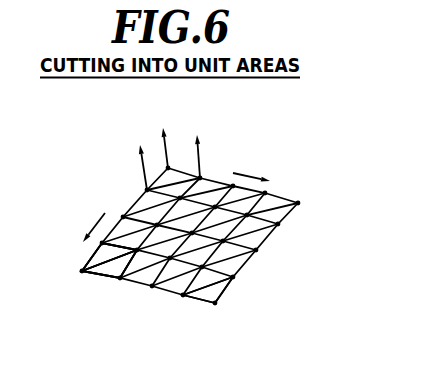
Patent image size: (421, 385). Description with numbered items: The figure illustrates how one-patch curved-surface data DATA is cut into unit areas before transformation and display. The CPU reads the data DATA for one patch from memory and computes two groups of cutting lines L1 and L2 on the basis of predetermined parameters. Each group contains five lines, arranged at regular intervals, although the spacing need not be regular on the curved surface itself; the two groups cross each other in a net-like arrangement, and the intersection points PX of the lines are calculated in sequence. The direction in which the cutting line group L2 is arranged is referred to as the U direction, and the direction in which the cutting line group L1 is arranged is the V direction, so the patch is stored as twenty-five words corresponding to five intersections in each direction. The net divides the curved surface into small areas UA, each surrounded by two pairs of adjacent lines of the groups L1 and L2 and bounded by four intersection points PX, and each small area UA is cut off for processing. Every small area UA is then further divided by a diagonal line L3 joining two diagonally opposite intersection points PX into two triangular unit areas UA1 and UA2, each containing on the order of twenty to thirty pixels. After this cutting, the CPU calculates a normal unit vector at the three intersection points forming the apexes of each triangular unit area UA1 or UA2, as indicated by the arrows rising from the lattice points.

The cutting line group L1 is at (243, 266).
The cutting line group L2 is at (197, 278).
The diagonal lines L3 is at (163, 183).
The intersection points PX is at (180, 199).
The U direction U is at (261, 181).
The V direction V is at (84, 240).
The one-patch data DATA is at (214, 292).
The triangular unit area UA1 is at (103, 257).
The triangular unit area UA2 is at (111, 271).
The small area UA is at (150, 325).